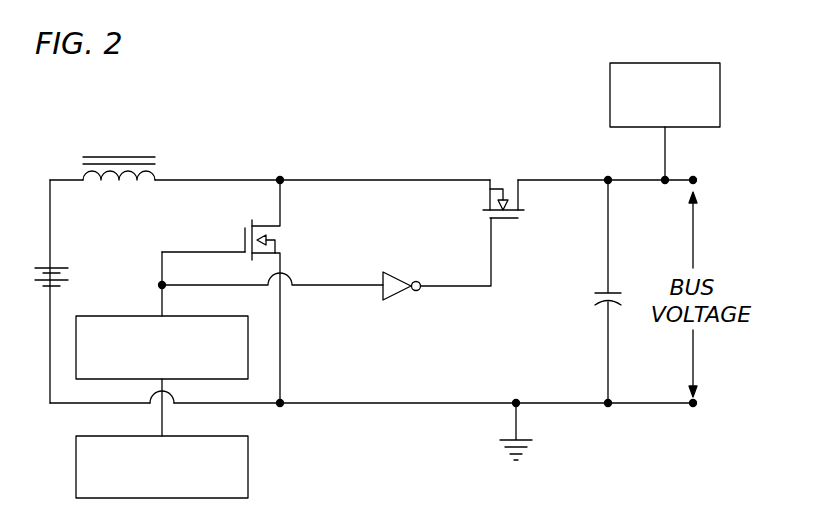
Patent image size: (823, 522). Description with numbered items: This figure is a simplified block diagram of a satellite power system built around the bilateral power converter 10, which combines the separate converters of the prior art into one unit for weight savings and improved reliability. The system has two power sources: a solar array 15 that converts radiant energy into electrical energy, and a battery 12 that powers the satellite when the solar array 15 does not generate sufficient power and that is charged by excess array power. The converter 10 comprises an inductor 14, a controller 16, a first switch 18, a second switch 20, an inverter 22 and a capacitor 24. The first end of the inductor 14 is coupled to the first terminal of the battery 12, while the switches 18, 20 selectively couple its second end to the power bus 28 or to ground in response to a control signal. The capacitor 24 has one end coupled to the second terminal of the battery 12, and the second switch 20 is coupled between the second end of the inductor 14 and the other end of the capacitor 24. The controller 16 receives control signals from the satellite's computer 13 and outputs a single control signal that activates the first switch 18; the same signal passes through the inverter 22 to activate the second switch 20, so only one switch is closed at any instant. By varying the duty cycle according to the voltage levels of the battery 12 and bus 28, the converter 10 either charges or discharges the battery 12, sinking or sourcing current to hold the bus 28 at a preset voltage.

The bilateral power converter 10 is at (384, 152).
The battery 12 is at (60, 268).
The computer 13 is at (250, 466).
The inductor 14 is at (130, 158).
The solar array 15 is at (673, 63).
The controller 16 is at (215, 316).
The first switch 18 is at (283, 240).
The second switch 20 is at (521, 196).
The inverter 22 is at (396, 272).
The capacitor 24 is at (594, 300).
The bus 28 is at (545, 180).